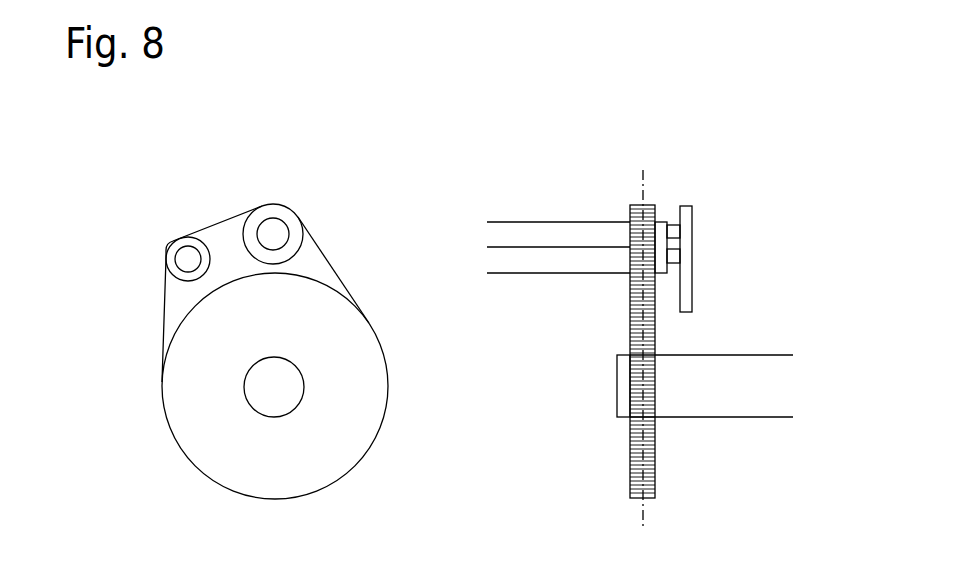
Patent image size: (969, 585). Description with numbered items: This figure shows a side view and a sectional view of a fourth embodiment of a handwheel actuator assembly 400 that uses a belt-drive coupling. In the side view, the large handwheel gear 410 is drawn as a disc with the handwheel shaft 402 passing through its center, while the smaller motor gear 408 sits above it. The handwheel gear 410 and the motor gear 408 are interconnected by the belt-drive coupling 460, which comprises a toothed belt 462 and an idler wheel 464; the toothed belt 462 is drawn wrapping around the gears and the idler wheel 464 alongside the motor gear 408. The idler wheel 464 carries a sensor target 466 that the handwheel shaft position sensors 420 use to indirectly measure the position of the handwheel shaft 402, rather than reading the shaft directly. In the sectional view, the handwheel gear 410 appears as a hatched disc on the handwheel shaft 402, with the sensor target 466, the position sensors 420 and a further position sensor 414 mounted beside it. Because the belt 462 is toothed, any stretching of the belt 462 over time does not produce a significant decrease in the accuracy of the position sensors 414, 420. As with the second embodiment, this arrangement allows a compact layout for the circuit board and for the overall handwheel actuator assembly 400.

The handwheel actuator assembly 400 is at (128, 178).
The handwheel shaft 402 is at (273, 417).
The motor gear 408 is at (275, 205).
The handwheel gear 410 is at (336, 482).
The position sensor 414 is at (688, 232).
The handwheel shaft position sensor 420 is at (690, 260).
The belt-drive coupling 460 is at (138, 276).
The toothed belt 462 is at (163, 308).
The idler wheel 464 is at (204, 232).
The sensor target 466 is at (668, 268).